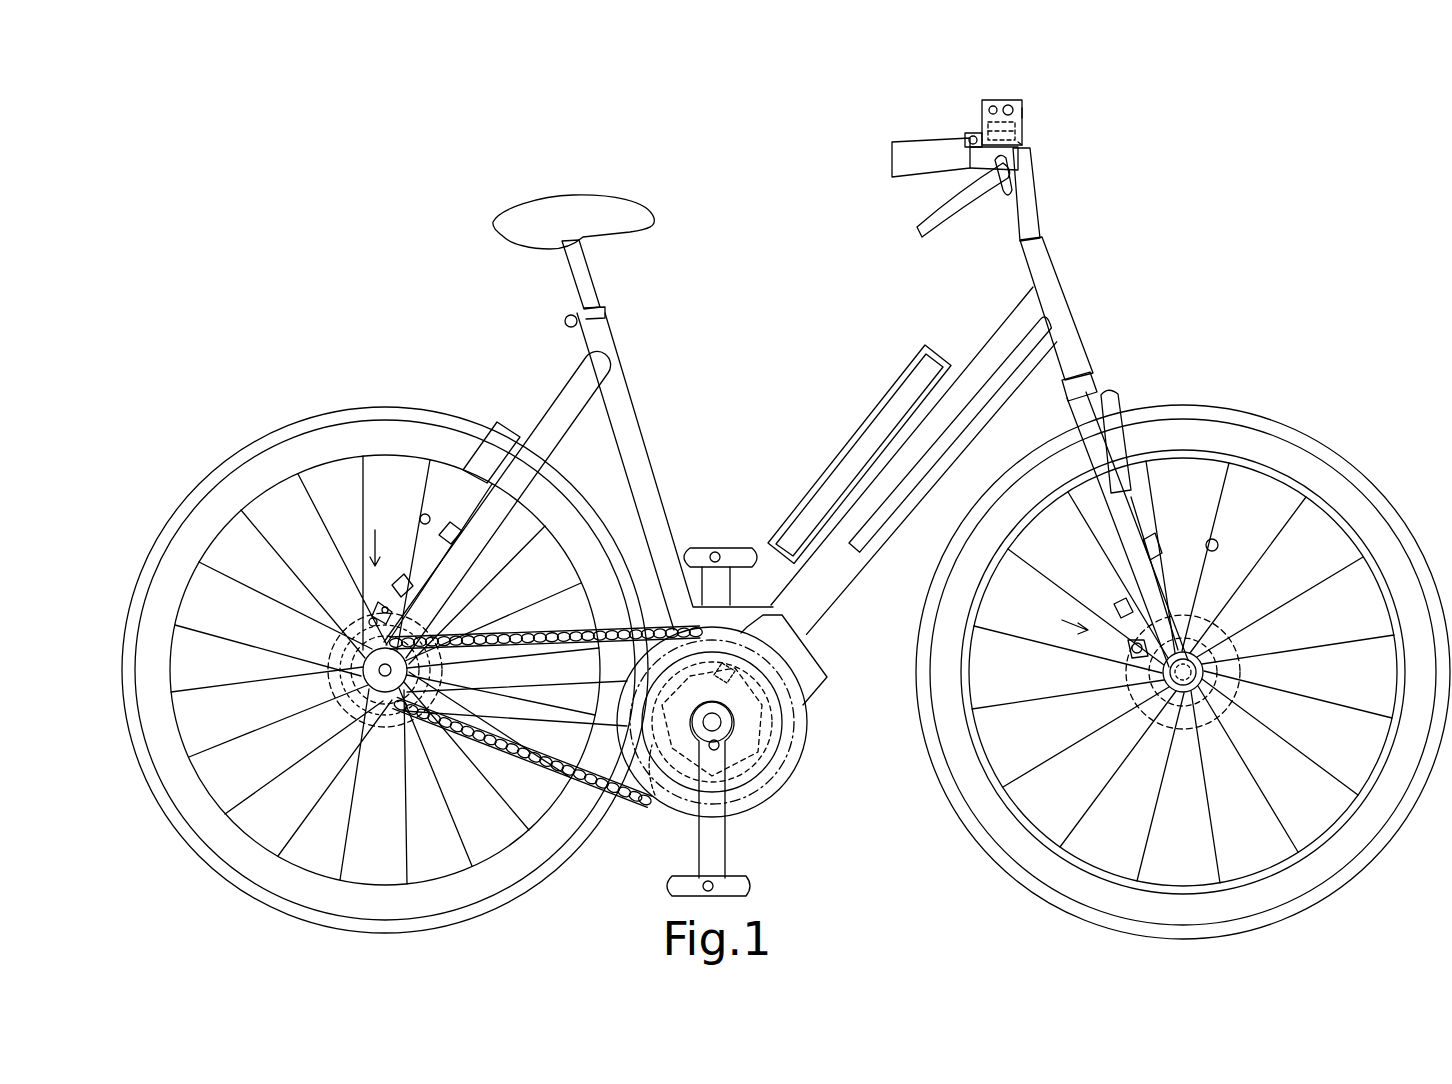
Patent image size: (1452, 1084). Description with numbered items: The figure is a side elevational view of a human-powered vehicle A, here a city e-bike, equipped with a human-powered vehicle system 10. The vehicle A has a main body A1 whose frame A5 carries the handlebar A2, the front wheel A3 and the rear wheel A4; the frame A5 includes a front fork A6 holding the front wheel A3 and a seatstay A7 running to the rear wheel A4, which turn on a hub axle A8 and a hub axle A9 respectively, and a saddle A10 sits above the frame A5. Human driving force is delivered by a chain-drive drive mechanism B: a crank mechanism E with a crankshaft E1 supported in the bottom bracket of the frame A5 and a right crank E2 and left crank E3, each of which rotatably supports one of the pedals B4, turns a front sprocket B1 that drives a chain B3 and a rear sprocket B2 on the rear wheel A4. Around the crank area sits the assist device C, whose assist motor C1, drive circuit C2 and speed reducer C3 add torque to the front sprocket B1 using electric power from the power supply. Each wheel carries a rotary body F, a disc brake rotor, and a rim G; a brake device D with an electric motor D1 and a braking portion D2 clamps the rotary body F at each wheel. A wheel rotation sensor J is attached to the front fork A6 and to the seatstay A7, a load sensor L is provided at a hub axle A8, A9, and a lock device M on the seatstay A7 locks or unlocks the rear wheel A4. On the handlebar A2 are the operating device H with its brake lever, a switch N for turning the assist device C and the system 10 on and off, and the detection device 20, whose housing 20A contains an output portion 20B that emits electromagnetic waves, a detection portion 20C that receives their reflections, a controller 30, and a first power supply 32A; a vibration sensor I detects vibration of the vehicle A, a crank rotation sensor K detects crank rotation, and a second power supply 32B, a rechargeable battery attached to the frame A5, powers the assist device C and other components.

The human-powered vehicle system 10 is at (1172, 279).
The detection device 20 is at (1000, 98).
The housing 20A is at (1012, 100).
The output portion 20B is at (985, 96).
The detection portion 20C is at (1024, 112).
The controller 30 is at (1024, 124).
The first power supply 32A is at (1024, 141).
The second power supply 32B is at (830, 426).
The human-powered vehicle A is at (1168, 107).
The main body A1 is at (652, 400).
The handlebar A2 is at (903, 142).
The front wheel A3 is at (1240, 406).
The rear wheel A4 is at (332, 406).
The frame A5 is at (887, 540).
The front fork A6 is at (1108, 544).
The seatstay A7 is at (553, 402).
The hub axle A8 is at (1185, 738).
The hub axle A9 is at (395, 672).
The saddle A10 is at (576, 192).
The drive mechanism B is at (800, 881).
The front sprocket B1 is at (660, 792).
The rear sprocket B2 is at (352, 722).
The chain B3 is at (497, 740).
The pedals B4 is at (718, 548).
The assist device C is at (816, 647).
The assist motor C1 is at (830, 680).
The drive circuit C2 is at (622, 707).
The speed reducer C3 is at (792, 702).
The brake device D is at (726, 568).
The electric motor D1 is at (401, 574).
The braking portion D2 is at (365, 606).
The crank mechanism E is at (830, 783).
The crankshaft E1 is at (724, 728).
The right crank E2 is at (728, 850).
The left crank E3 is at (734, 586).
The rotary body F is at (335, 694).
The rim G is at (250, 447).
The operating device H is at (967, 227).
The vibration sensor I is at (965, 136).
The wheel rotation sensor J is at (446, 520).
The crank rotation sensor K is at (768, 798).
The load sensor L is at (1245, 673).
The lock device M is at (485, 428).
The switch N is at (975, 134).